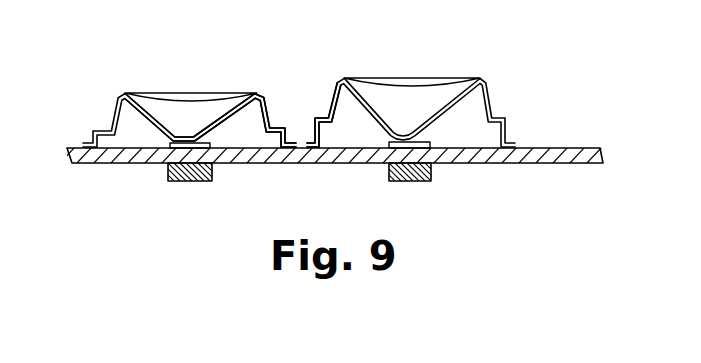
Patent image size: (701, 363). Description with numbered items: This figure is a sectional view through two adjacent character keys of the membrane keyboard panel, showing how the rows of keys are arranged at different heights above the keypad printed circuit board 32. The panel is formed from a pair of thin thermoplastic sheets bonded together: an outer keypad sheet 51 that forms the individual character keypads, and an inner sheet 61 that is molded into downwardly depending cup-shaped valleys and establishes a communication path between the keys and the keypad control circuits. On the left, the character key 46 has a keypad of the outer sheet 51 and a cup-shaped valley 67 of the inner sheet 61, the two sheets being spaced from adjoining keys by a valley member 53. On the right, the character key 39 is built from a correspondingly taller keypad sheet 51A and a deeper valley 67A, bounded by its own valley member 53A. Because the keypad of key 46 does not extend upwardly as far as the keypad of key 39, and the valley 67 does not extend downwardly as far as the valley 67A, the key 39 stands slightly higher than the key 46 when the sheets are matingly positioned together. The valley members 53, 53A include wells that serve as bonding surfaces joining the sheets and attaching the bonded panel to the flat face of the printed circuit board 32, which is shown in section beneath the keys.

The keypad printed circuit board 32 is at (548, 154).
The character key 39 is at (424, 86).
The character key 46 is at (196, 125).
The outer keypad sheet 51 is at (178, 88).
The keypad sheet 51A is at (416, 84).
The valley member 53 is at (276, 99).
The valley member 53A is at (318, 106).
The inner sheet 61 is at (236, 128).
The valley 67 is at (158, 114).
The valley 67A is at (457, 106).